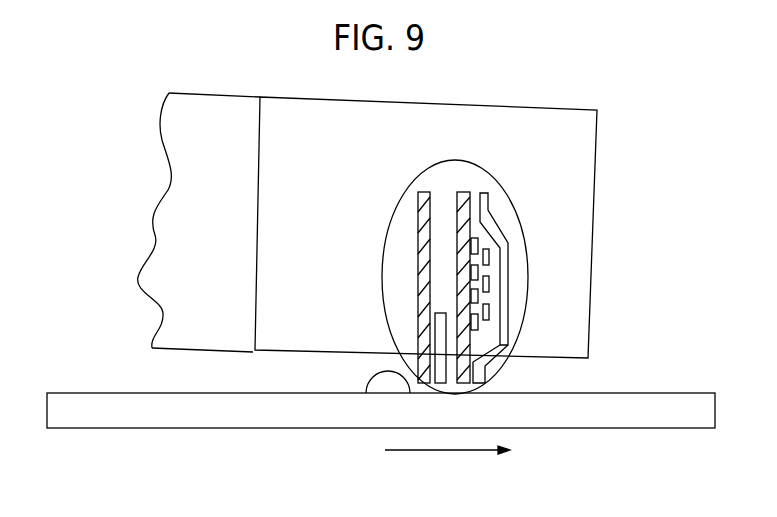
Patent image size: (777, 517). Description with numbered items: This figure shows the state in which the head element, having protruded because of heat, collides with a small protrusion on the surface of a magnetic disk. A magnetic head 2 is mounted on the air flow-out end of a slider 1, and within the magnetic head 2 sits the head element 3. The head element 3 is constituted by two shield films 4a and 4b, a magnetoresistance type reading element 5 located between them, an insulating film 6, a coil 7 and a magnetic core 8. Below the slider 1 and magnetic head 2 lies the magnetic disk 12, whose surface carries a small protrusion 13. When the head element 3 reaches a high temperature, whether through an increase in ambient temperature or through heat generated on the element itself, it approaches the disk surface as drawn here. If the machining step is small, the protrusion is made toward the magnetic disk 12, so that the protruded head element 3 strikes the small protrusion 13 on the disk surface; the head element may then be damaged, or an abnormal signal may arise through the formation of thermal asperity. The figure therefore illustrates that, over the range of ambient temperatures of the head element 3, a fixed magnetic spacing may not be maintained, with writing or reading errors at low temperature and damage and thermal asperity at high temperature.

The slider 1 is at (202, 128).
The magnetic head 2 is at (303, 135).
The head element 3 is at (458, 160).
The shield film 4a is at (418, 205).
The shield film 4b is at (462, 192).
The magnetoresistance type reading element 5 is at (437, 333).
The insulating film 6 is at (452, 343).
The coil 7 is at (478, 226).
The magnetic core 8 is at (493, 232).
The magnetic disk 12 is at (278, 418).
The small protrusion 13 is at (390, 385).